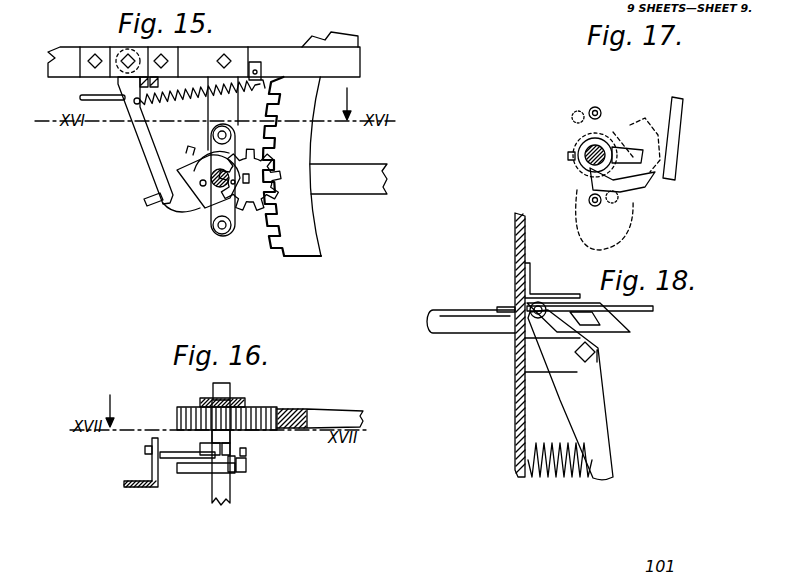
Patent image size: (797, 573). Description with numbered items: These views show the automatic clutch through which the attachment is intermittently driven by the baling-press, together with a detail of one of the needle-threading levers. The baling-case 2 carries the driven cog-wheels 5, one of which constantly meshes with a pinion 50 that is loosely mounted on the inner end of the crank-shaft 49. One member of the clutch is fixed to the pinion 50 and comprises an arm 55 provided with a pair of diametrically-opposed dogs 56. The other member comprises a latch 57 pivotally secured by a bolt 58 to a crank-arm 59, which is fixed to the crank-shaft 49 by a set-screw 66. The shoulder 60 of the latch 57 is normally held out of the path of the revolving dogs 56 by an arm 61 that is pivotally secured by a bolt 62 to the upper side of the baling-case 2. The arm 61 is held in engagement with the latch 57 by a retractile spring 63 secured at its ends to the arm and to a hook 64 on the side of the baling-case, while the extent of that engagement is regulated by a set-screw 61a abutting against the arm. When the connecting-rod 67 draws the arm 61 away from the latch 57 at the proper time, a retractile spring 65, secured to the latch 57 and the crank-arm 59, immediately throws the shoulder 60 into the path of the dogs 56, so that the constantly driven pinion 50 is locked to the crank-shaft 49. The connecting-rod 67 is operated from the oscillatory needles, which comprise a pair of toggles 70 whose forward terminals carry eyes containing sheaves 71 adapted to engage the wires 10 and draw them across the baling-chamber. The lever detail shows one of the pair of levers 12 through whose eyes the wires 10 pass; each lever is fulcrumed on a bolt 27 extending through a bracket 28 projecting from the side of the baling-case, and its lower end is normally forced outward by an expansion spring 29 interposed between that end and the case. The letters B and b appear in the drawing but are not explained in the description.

In FIG. 15, the baling-case 2 is at (63, 50).
In FIG. 18, the baling-case 2 is at (515, 235).
In FIG. 15, the cog-wheels 5 is at (300, 207).
In FIG. 16, the cog-wheels 5 is at (337, 415).
In FIG. 18, the wires 10 is at (650, 312).
In FIG. 18, the levers 12 is at (595, 418).
In FIG. 18, the bolts 27 is at (600, 357).
In FIG. 18, the brackets 28 is at (555, 363).
In FIG. 18, the expansion springs 29 is at (560, 478).
In FIG. 15, the crank-shaft 49 is at (205, 210).
In FIG. 16, the crank-shaft 49 is at (222, 497).
In FIG. 17, the crank-shaft 49 is at (554, 146).
In FIG. 15, the pinion 50 is at (252, 203).
In FIG. 16, the pinion 50 is at (187, 407).
In FIG. 17, the pinion 50 is at (595, 155).
In FIG. 15, the arm 55 is at (213, 142).
In FIG. 16, the arm 55 is at (227, 433).
In FIG. 15, the dogs 56 is at (220, 238).
In FIG. 16, the dogs 56 is at (237, 463).
In FIG. 17, the dogs 56 is at (593, 106).
In FIG. 15, the latch 57 is at (175, 200).
In FIG. 16, the latch 57 is at (172, 458).
In FIG. 17, the latch 57 is at (641, 135).
In FIG. 15, the bolt 58 is at (215, 190).
In FIG. 16, the bolt 58 is at (200, 445).
In FIG. 17, the bolt 58 is at (590, 180).
In FIG. 15, the crank-arm 59 is at (190, 184).
In FIG. 16, the crank-arm 59 is at (193, 462).
In FIG. 17, the crank-arm 59 is at (650, 155).
In FIG. 15, the shoulder 60 is at (238, 204).
In FIG. 17, the shoulder 60 is at (604, 227).
In FIG. 15, the arm 61 is at (135, 140).
In FIG. 16, the arm 61 is at (147, 468).
In FIG. 17, the arm 61 is at (677, 108).
In FIG. 15, the set-screw 61a is at (196, 62).
In FIG. 15, the bolt 62 is at (126, 53).
In FIG. 15, the retractile spring 63 is at (234, 77).
In FIG. 15, the hook 64 is at (258, 62).
In FIG. 15, the retractile spring 65 is at (197, 162).
In FIG. 16, the retractile spring 65 is at (233, 472).
In FIG. 17, the retractile spring 65 is at (613, 133).
In FIG. 15, the set-screw 66 is at (250, 178).
In FIG. 16, the set-screw 66 is at (242, 450).
In FIG. 17, the set-screw 66 is at (567, 156).
In FIG. 15, the connecting-rod 67 is at (80, 96).
In FIG. 18, the toggles 70 is at (555, 294).
In FIG. 18, the sheaves 71 is at (612, 333).
In FIG. 18, the plate B is at (510, 307).
In FIG. 18, the part b is at (560, 247).